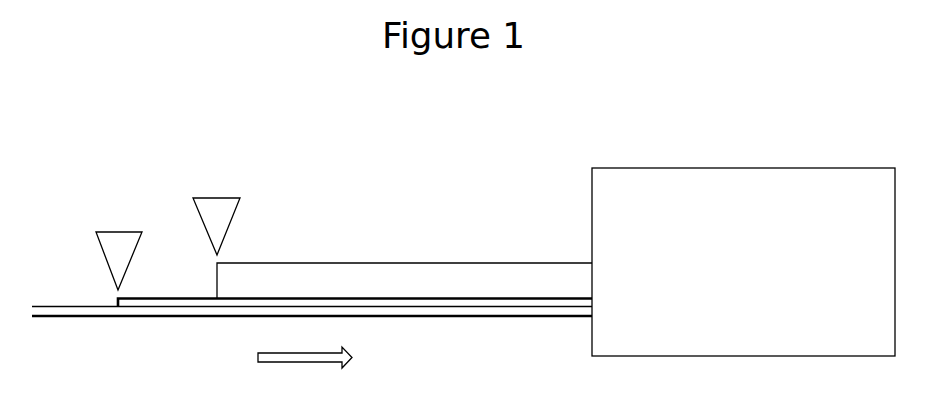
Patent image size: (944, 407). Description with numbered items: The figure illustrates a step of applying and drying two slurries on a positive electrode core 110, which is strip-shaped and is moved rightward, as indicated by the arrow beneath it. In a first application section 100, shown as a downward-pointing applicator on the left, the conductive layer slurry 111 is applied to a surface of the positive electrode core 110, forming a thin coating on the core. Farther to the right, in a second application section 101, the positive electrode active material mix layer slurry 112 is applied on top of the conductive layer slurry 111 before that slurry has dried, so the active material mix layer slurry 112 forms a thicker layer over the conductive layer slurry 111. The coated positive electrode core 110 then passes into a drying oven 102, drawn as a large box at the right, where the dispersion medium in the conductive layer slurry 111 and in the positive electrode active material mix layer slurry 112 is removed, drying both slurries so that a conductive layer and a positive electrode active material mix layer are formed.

The first application section 100 is at (113, 235).
The second application section 101 is at (215, 217).
The drying oven 102 is at (702, 212).
The positive electrode core 110 is at (46, 312).
The conductive layer slurry 111 is at (345, 297).
The positive electrode active material mix layer slurry 112 is at (480, 280).